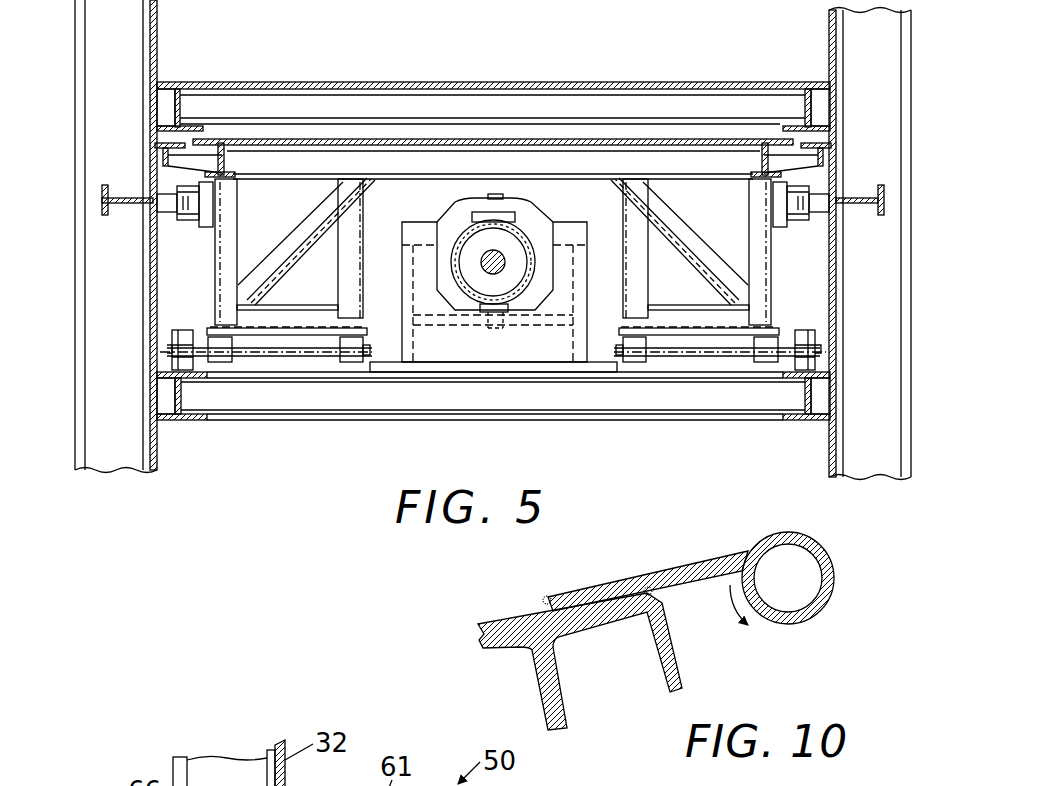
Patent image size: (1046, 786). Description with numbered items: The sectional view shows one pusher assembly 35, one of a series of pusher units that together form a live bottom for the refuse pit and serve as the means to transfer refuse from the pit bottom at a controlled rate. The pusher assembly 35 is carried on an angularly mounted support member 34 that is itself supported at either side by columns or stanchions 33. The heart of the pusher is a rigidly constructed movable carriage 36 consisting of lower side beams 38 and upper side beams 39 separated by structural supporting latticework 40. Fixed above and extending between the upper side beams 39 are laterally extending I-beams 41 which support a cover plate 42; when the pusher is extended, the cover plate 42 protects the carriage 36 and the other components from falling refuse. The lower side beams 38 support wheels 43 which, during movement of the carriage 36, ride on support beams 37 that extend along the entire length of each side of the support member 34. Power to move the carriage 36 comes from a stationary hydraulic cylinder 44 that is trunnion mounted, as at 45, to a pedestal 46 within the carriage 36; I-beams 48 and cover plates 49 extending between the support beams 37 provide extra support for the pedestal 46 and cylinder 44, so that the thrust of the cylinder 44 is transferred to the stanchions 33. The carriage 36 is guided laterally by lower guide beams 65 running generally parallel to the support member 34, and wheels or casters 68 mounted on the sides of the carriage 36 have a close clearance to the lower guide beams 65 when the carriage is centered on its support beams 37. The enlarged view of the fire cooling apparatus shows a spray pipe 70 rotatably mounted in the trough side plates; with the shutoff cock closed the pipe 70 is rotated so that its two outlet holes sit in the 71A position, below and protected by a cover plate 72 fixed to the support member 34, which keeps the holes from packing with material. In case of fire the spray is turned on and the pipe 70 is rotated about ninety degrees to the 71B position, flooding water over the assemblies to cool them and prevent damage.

In FIG. 5, the columns or stanchions 33 is at (92, 42).
In FIG. 5, the support member 34 is at (372, 80).
In FIG. 5, the cover plate 42 is at (692, 140).
In FIG. 5, the I-beams 41 is at (561, 165).
In FIG. 5, the upper side beams 39 is at (167, 152).
In FIG. 5, the lower guide beams 65 is at (125, 195).
In FIG. 5, the wheels or casters 68 is at (160, 212).
In FIG. 5, the structural supporting latticework 40 is at (295, 240).
In FIG. 5, the lower side beams 38 is at (207, 321).
In FIG. 5, the wheels 43 is at (813, 330).
In FIG. 5, the hydraulic cylinder 44 is at (467, 235).
In FIG. 5, the trunnion mounting 45 is at (520, 297).
In FIG. 5, the pedestal 46 is at (438, 352).
In FIG. 5, the I-beams 48 is at (314, 398).
In FIG. 5, the support beams 37 is at (187, 422).
In FIG. 5, the cover plates 49 is at (740, 378).
In FIG. 5, the movable carriage 36 is at (275, 370).
In FIG. 10, the pusher assembly 35 is at (703, 657).
In FIG. 10, the cover plate 72 is at (703, 553).
In FIG. 10, the spray pipe 70 is at (813, 538).
In FIG. 10, the outlet hole off position 71A is at (827, 565).
In FIG. 10, the outlet hole on position 71B is at (753, 545).